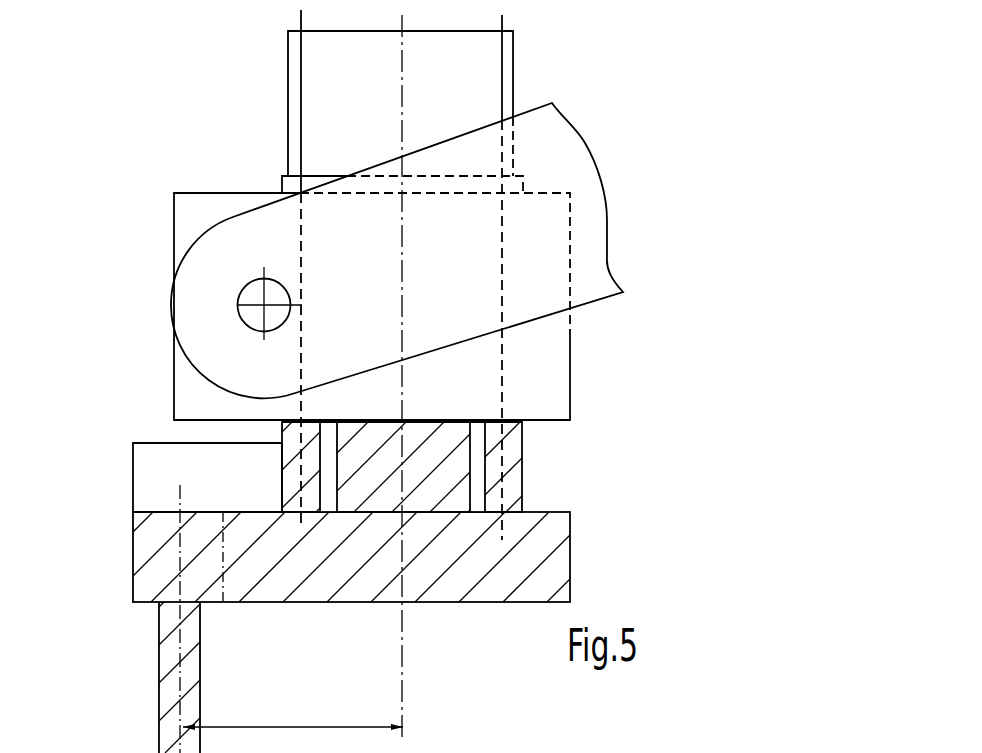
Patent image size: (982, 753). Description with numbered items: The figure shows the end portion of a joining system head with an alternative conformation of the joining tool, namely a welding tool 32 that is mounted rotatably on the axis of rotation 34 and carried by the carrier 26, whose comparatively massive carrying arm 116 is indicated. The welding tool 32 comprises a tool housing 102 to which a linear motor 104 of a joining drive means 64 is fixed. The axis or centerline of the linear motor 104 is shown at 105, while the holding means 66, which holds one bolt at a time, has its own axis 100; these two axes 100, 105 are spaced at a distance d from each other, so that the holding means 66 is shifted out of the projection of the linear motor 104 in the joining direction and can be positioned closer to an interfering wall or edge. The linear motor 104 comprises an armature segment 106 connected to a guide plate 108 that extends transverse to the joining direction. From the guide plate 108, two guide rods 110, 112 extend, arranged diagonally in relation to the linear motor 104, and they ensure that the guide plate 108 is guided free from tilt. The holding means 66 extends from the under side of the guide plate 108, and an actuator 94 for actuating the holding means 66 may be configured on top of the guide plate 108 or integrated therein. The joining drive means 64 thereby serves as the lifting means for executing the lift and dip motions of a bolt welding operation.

The carrier 26 is at (574, 171).
The welding tool 32 is at (359, 272).
The axis of rotation 34 is at (262, 303).
The joining drive means 64 is at (518, 46).
The holding means 66 is at (347, 384).
The actuator 94 is at (145, 470).
The axis of the holding means 100 is at (177, 680).
The tool housing 102 is at (195, 212).
The linear motor 104 is at (500, 66).
The axis of the linear motor 105 is at (405, 633).
The armature segment 106 is at (432, 482).
The guide plate 108 is at (380, 606).
The guide rod 110 is at (287, 428).
The guide rod 112 is at (507, 462).
The carrying arm 116 is at (574, 737).